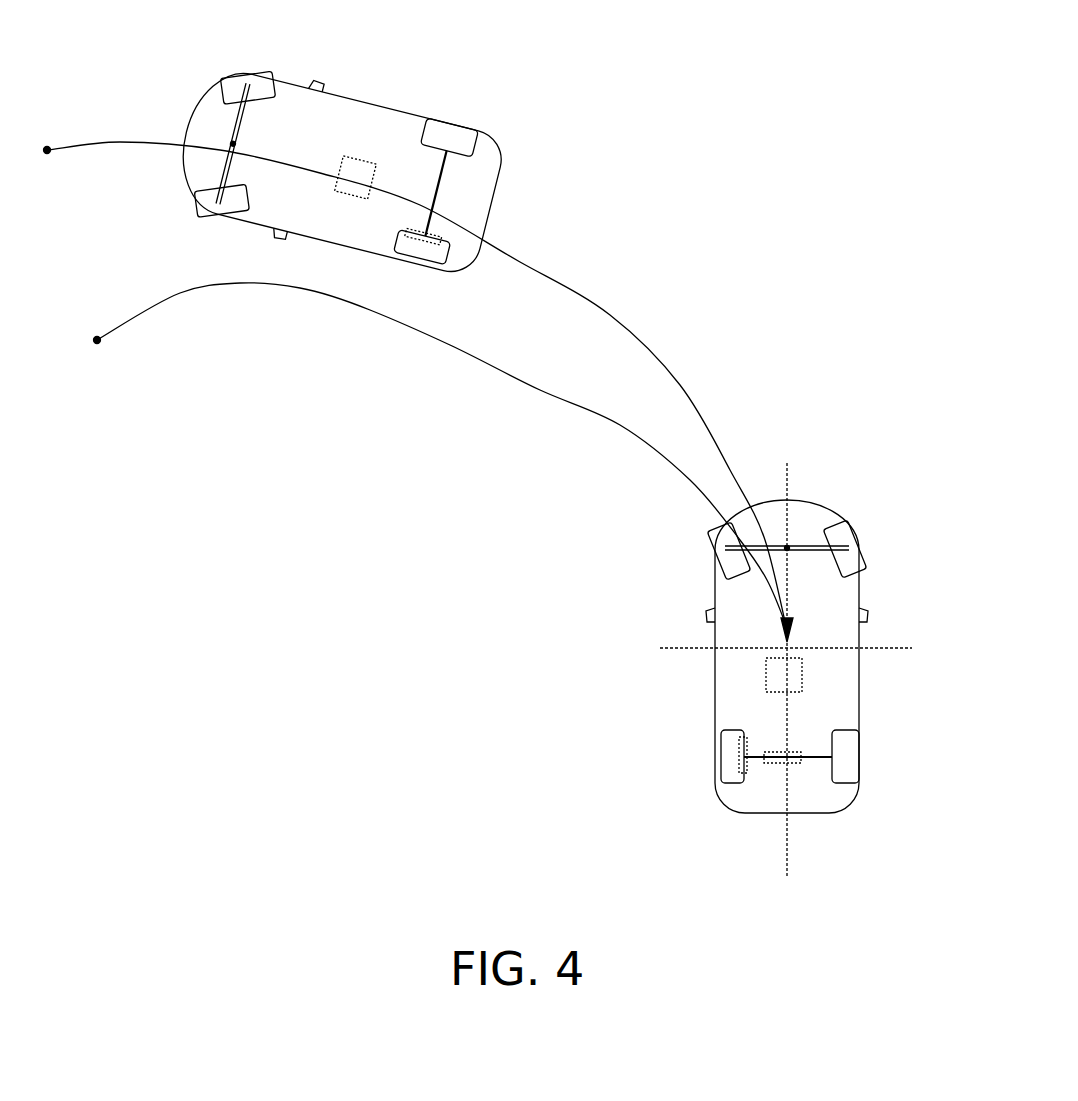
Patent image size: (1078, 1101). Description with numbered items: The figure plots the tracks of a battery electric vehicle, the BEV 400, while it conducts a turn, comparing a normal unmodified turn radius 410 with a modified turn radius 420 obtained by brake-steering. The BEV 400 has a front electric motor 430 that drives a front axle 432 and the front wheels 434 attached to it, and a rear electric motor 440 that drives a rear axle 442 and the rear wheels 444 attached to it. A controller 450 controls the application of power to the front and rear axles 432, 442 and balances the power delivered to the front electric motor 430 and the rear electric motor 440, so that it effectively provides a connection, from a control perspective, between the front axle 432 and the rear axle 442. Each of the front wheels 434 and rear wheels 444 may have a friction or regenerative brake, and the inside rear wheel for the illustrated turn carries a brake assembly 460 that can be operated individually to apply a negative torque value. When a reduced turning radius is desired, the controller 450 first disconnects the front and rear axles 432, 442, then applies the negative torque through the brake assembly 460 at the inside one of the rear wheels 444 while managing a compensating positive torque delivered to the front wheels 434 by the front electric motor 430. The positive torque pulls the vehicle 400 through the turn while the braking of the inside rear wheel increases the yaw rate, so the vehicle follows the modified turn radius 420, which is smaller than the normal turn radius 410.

The BEV 400 is at (378, 112).
The normal turn radius 410 is at (602, 303).
The modified turn radius 420 is at (182, 297).
The front electric motor 430 is at (227, 138).
The front axle 432 is at (240, 122).
The front wheels 434 is at (242, 92).
The rear electric motor 440 is at (775, 763).
The rear axle 442 is at (447, 167).
The rear wheels 444 is at (718, 763).
The controller 450 is at (349, 187).
The brake assembly 460 is at (432, 245).